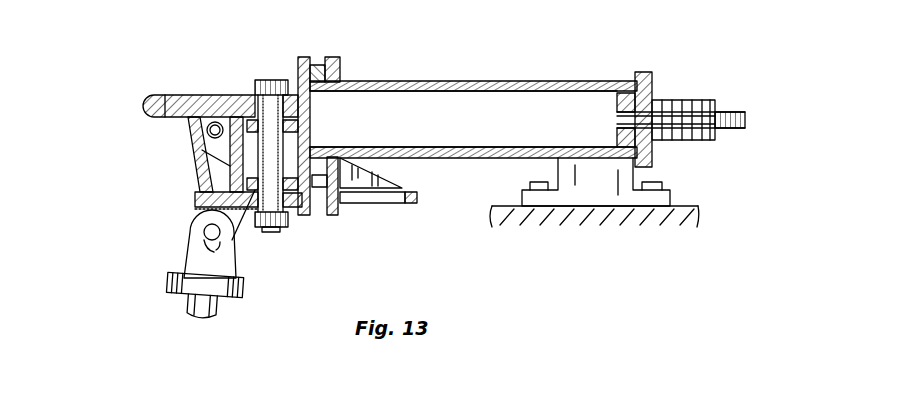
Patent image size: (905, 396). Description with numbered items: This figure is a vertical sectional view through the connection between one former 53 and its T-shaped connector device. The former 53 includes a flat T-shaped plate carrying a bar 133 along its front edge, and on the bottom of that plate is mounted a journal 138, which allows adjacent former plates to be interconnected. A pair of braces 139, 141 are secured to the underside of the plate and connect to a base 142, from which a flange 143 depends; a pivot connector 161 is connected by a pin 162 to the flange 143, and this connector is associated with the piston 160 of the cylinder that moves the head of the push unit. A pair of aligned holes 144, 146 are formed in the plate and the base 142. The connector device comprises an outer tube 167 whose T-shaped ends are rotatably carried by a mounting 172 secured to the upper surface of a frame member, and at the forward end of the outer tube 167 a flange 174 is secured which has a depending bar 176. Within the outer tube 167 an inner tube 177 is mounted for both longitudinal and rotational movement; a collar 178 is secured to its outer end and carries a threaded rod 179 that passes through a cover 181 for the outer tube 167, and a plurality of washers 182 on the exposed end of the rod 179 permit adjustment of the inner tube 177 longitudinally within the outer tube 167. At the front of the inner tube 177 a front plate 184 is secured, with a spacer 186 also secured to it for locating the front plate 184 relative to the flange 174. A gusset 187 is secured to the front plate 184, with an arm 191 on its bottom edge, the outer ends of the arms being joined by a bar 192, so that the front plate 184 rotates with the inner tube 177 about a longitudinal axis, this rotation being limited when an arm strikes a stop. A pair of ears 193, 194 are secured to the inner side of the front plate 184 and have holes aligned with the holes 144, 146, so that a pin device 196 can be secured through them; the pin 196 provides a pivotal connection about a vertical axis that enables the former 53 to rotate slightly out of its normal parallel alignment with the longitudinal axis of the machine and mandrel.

The bar 133 is at (143, 100).
The pin device 196 is at (262, 80).
The ear 193 is at (257, 98).
The hole 144 is at (255, 84).
The front plate 184 is at (297, 62).
The spacer 186 is at (318, 64).
The flange 174 is at (340, 60).
The outer tube 167 is at (550, 81).
The inner tube 177 is at (500, 93).
The collar 178 is at (617, 102).
The cover 181 is at (652, 78).
The washers 182 is at (697, 100).
The threaded rod 179 is at (728, 112).
The mounting 172 is at (622, 178).
The gusset 187 is at (376, 170).
The arm 191 is at (392, 203).
The bar 192 is at (417, 196).
The depending bar 176 is at (333, 216).
The hole 146 is at (300, 222).
The ear 194 is at (243, 206).
The journal 138 is at (196, 134).
The brace 141 is at (204, 150).
The former 53 is at (183, 172).
The brace 139 is at (196, 180).
The base 142 is at (197, 200).
The flange 143 is at (195, 212).
The pivot connector 161 is at (188, 262).
The pin 162 is at (215, 233).
The piston 160 is at (222, 312).